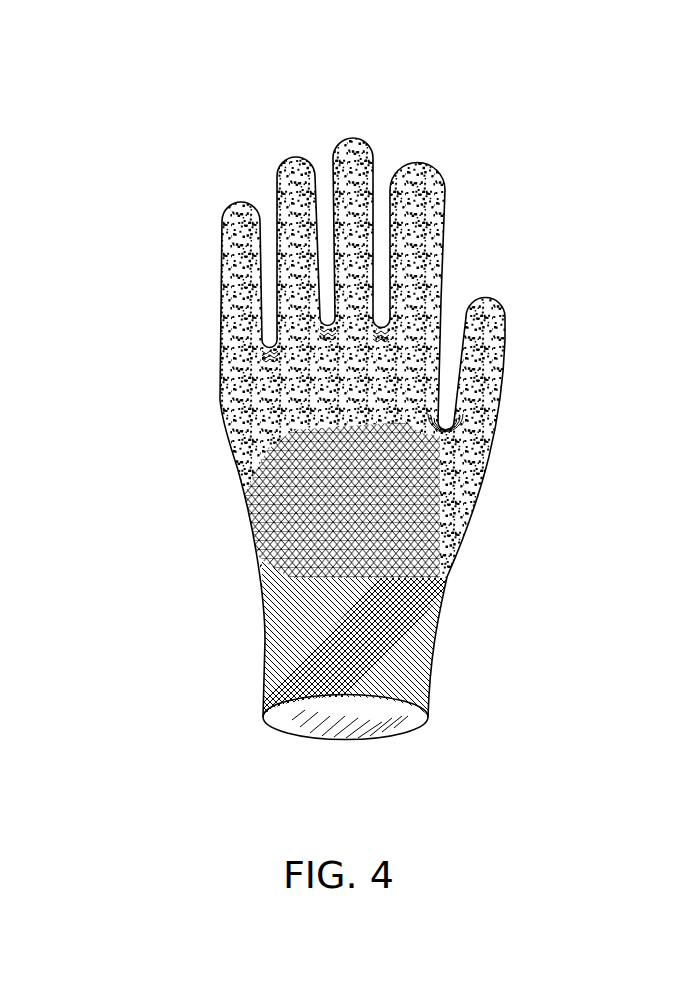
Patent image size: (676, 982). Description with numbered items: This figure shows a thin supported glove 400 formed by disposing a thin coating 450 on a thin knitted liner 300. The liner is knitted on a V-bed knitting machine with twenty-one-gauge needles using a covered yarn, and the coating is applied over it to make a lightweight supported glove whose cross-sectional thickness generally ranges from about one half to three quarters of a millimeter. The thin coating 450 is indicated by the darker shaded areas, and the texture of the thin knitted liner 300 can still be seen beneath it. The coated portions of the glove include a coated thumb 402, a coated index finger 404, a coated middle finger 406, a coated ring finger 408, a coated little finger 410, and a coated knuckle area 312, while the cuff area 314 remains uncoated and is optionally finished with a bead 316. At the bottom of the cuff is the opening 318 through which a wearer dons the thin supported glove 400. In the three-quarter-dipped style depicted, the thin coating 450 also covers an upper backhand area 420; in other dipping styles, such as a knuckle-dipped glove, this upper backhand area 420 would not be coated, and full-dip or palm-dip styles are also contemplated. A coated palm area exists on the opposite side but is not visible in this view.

The thin knitted liner 300 is at (408, 416).
The knuckle area 312 is at (284, 525).
The cuff area 314 is at (293, 653).
The bead 316 is at (263, 713).
The opening 318 is at (338, 755).
The thin supported glove 400 is at (408, 416).
The coated thumb 402 is at (485, 295).
The coated index finger 404 is at (428, 158).
The coated middle finger 406 is at (352, 135).
The coated ring finger 408 is at (296, 153).
The coated little finger 410 is at (238, 198).
The upper backhand area 420 is at (380, 422).
The thin coating 450 is at (278, 233).